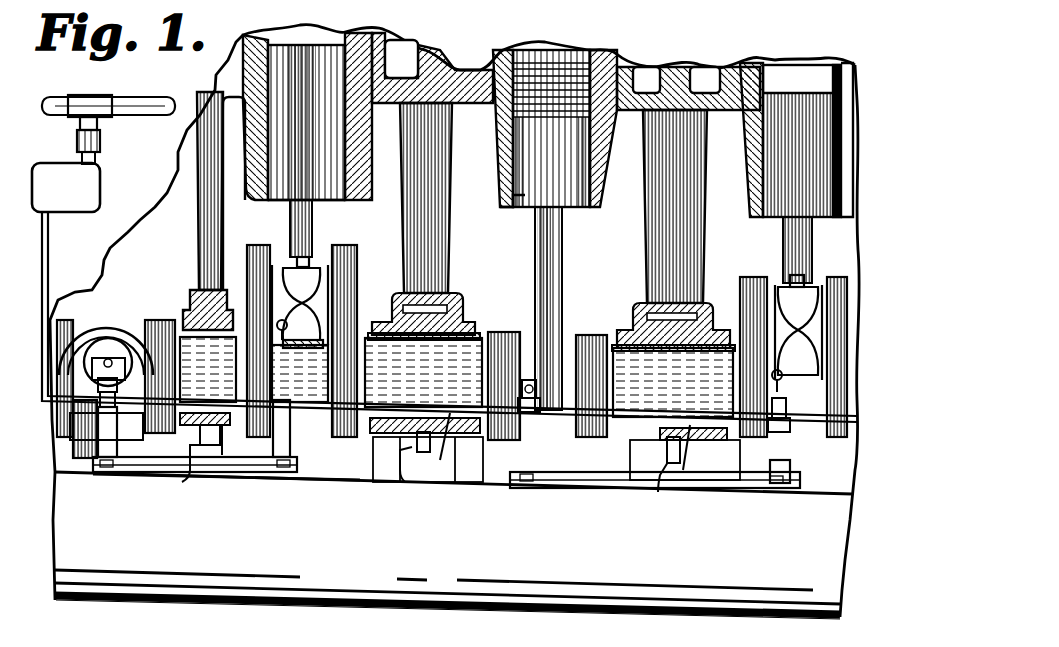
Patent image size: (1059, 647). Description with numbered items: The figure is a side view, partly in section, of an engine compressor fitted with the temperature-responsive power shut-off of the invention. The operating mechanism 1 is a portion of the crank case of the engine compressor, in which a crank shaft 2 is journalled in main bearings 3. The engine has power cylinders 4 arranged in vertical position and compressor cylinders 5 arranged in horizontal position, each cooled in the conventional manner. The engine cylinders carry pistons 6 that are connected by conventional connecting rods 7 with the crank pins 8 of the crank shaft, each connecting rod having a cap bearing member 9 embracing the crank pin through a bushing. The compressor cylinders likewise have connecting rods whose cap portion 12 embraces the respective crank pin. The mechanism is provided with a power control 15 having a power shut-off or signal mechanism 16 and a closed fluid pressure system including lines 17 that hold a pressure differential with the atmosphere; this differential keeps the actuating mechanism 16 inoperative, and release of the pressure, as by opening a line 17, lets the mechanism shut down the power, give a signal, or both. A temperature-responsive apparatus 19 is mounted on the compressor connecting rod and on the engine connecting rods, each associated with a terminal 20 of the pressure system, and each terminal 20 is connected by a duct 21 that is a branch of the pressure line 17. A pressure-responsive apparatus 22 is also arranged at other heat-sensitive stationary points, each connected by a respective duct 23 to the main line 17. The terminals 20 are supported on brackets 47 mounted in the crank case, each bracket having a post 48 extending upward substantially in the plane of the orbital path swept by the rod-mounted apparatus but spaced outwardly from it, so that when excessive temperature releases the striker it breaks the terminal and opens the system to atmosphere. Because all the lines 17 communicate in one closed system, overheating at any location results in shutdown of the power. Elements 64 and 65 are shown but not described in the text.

The operating mechanism 1 is at (808, 619).
The crank shaft 2 is at (463, 365).
The main bearings 3 is at (622, 333).
The power cylinders 4 is at (603, 182).
The compressor cylinders 5 is at (126, 322).
The pistons 6 is at (104, 325).
The connecting rods 7 is at (290, 224).
The crank pins 8 is at (345, 256).
The cap bearing members 9 is at (303, 355).
The cap portion 12 is at (84, 462).
The power control 15 is at (100, 178).
The power shut-off mechanism 16 is at (77, 142).
The lines 17 is at (48, 246).
The temperature-responsive apparatus 19 is at (277, 323).
The terminal 20 is at (796, 432).
The duct 21 is at (542, 402).
The pressure-responsive apparatus 22 is at (190, 478).
The duct 23 is at (220, 442).
The brackets 47 is at (265, 473).
The post 48 is at (291, 457).
The pump base 64 is at (395, 325).
The pump body 65 is at (463, 322).